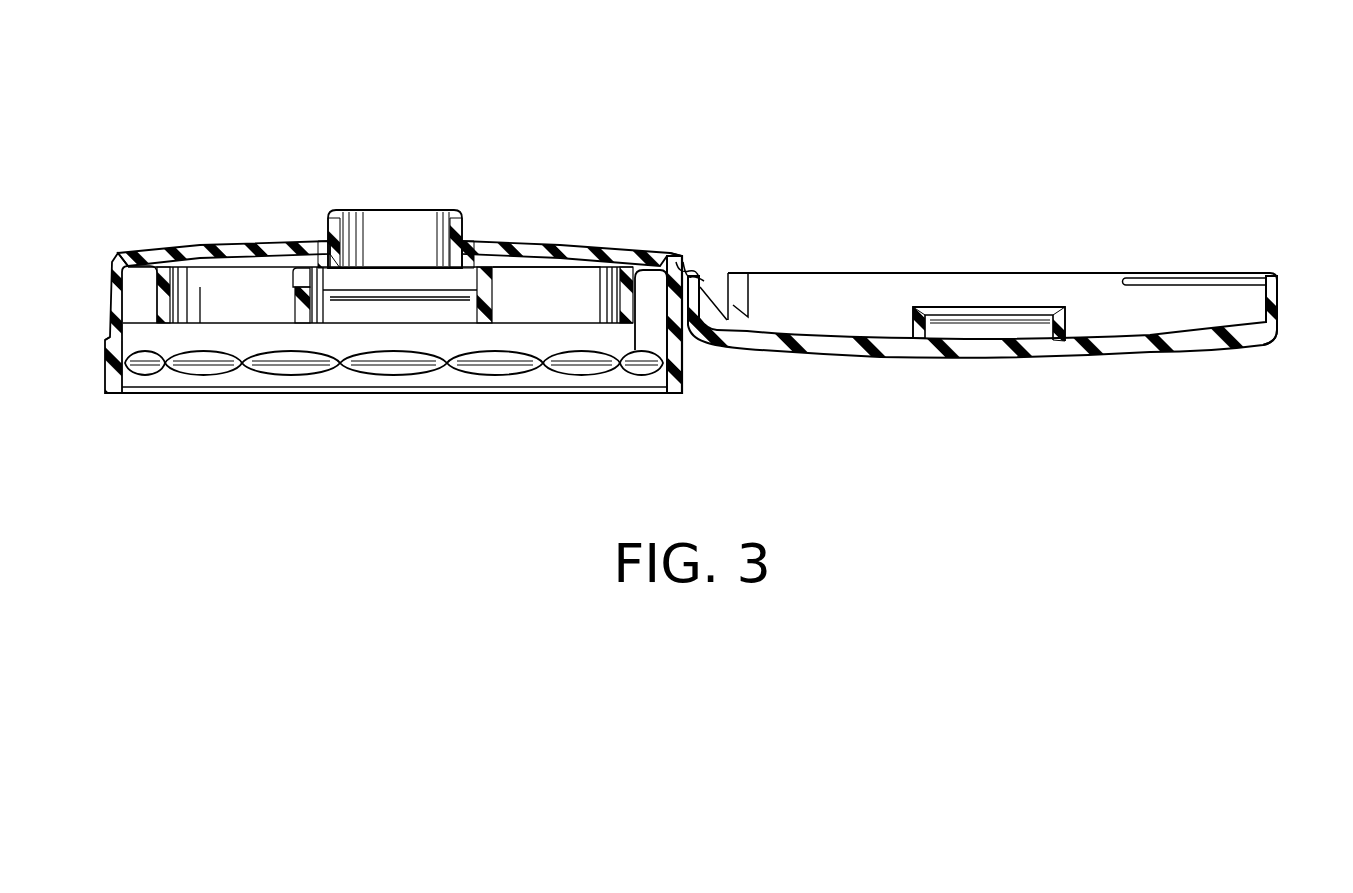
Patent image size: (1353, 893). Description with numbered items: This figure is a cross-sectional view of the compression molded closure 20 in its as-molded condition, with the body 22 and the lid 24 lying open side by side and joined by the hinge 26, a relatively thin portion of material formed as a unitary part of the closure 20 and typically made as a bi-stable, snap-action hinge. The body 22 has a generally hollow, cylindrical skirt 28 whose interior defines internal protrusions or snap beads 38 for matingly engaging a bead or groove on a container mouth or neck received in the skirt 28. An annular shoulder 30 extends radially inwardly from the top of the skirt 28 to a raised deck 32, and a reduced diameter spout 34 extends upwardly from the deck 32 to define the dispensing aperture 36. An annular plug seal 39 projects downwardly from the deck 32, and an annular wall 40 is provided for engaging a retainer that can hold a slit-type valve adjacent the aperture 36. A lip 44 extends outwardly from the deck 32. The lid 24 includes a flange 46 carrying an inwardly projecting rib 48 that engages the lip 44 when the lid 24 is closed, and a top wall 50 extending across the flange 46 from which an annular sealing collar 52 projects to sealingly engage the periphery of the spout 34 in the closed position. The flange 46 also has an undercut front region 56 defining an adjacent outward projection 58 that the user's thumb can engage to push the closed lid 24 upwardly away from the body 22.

The closure 20 is at (620, 118).
The body 22 is at (237, 405).
The lid 24 is at (1172, 363).
The hinge 26 is at (696, 262).
The skirt 28 is at (108, 365).
The annular shoulder 30 is at (118, 272).
The deck 32 is at (540, 243).
The spout 34 is at (330, 240).
The dispensing aperture 36 is at (362, 238).
The snap beads 38 is at (553, 368).
The plug seal 39 is at (638, 290).
The annular wall 40 is at (293, 298).
The lip 44 is at (120, 258).
The flange 46 is at (940, 284).
The rib 48 is at (1118, 288).
The top wall 50 is at (890, 348).
The sealing collar 52 is at (1066, 328).
The undercut front region 56 is at (1280, 294).
The outward projection 58 is at (1280, 318).